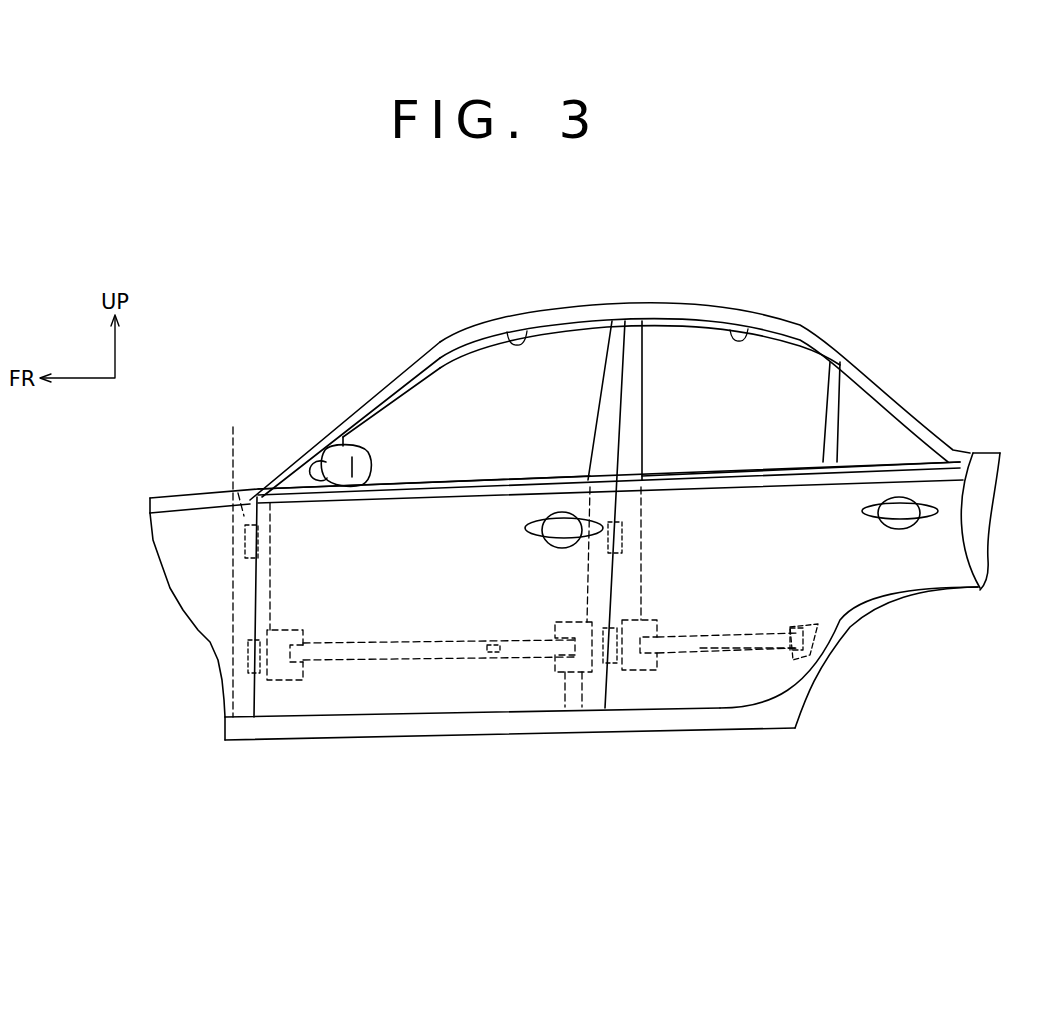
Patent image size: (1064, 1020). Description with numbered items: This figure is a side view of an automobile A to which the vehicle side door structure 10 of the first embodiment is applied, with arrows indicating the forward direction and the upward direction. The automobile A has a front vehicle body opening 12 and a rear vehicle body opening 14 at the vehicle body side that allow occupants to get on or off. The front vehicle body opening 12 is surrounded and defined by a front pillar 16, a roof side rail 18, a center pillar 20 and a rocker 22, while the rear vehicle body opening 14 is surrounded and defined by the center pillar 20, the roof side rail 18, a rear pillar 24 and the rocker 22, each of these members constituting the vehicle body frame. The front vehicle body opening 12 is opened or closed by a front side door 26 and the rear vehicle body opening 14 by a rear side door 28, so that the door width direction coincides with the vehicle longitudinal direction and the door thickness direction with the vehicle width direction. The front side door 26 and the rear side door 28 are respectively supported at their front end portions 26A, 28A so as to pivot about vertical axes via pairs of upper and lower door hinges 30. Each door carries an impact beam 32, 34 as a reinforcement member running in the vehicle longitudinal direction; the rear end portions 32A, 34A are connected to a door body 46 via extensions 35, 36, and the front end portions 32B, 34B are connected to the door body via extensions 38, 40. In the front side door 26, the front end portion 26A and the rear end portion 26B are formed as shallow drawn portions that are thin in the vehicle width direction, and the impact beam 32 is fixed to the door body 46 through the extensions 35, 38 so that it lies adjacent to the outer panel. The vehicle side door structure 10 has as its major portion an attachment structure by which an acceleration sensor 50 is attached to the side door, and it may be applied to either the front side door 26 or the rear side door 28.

The automobile A is at (865, 298).
The vehicle side door structure 10 is at (283, 598).
The front vehicle body opening 12 is at (512, 330).
The rear vehicle body opening 14 is at (747, 331).
The front pillar 16 is at (288, 458).
The roof side rail 18 is at (622, 310).
The center pillar 20 is at (634, 507).
The rocker 22 is at (571, 722).
The rear pillar 24 is at (925, 417).
The front side door 26 is at (422, 636).
The door body 46 is at (433, 693).
The front end portion of front side door 26A is at (265, 607).
The rear end portion of front side door 26B is at (590, 577).
The rear side door 28 is at (745, 690).
The front end portion of rear side door 28A is at (636, 583).
The door hinge 30 is at (258, 541).
The impact beam 32 is at (478, 640).
The rear end portion of impact beam 32A is at (555, 646).
The front end portion of impact beam 32B is at (297, 653).
The impact beam 34 is at (747, 633).
The rear end portion of impact beam 34A is at (815, 660).
The front end portion of impact beam 34B is at (717, 650).
The extension 35 is at (563, 707).
The extension 36 is at (820, 638).
The extension 38 is at (303, 682).
The extension 40 is at (653, 672).
The acceleration sensor 50 is at (488, 658).